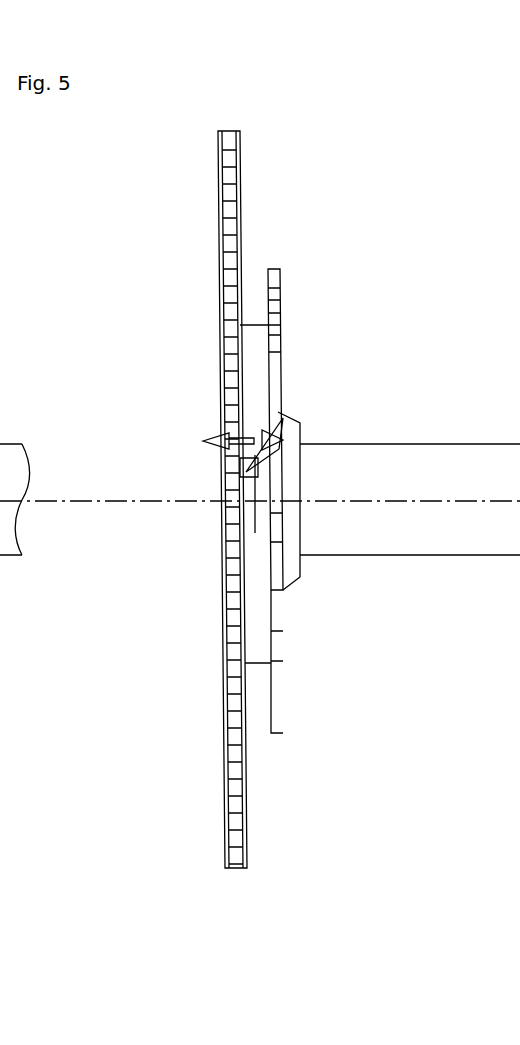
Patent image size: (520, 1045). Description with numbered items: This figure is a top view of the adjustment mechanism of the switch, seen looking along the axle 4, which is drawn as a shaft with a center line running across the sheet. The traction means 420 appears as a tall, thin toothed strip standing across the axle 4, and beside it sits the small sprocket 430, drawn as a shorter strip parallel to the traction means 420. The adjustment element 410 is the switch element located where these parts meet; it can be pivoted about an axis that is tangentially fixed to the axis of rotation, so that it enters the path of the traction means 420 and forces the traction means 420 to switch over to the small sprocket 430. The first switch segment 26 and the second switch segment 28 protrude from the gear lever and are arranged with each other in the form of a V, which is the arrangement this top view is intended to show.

The axle 4 is at (86, 503).
The first switch segment 26 is at (278, 447).
The second switch segment 28 is at (240, 450).
The adjustment element 410 is at (240, 432).
The traction means 420 is at (230, 141).
The small sprocket 430 is at (278, 275).